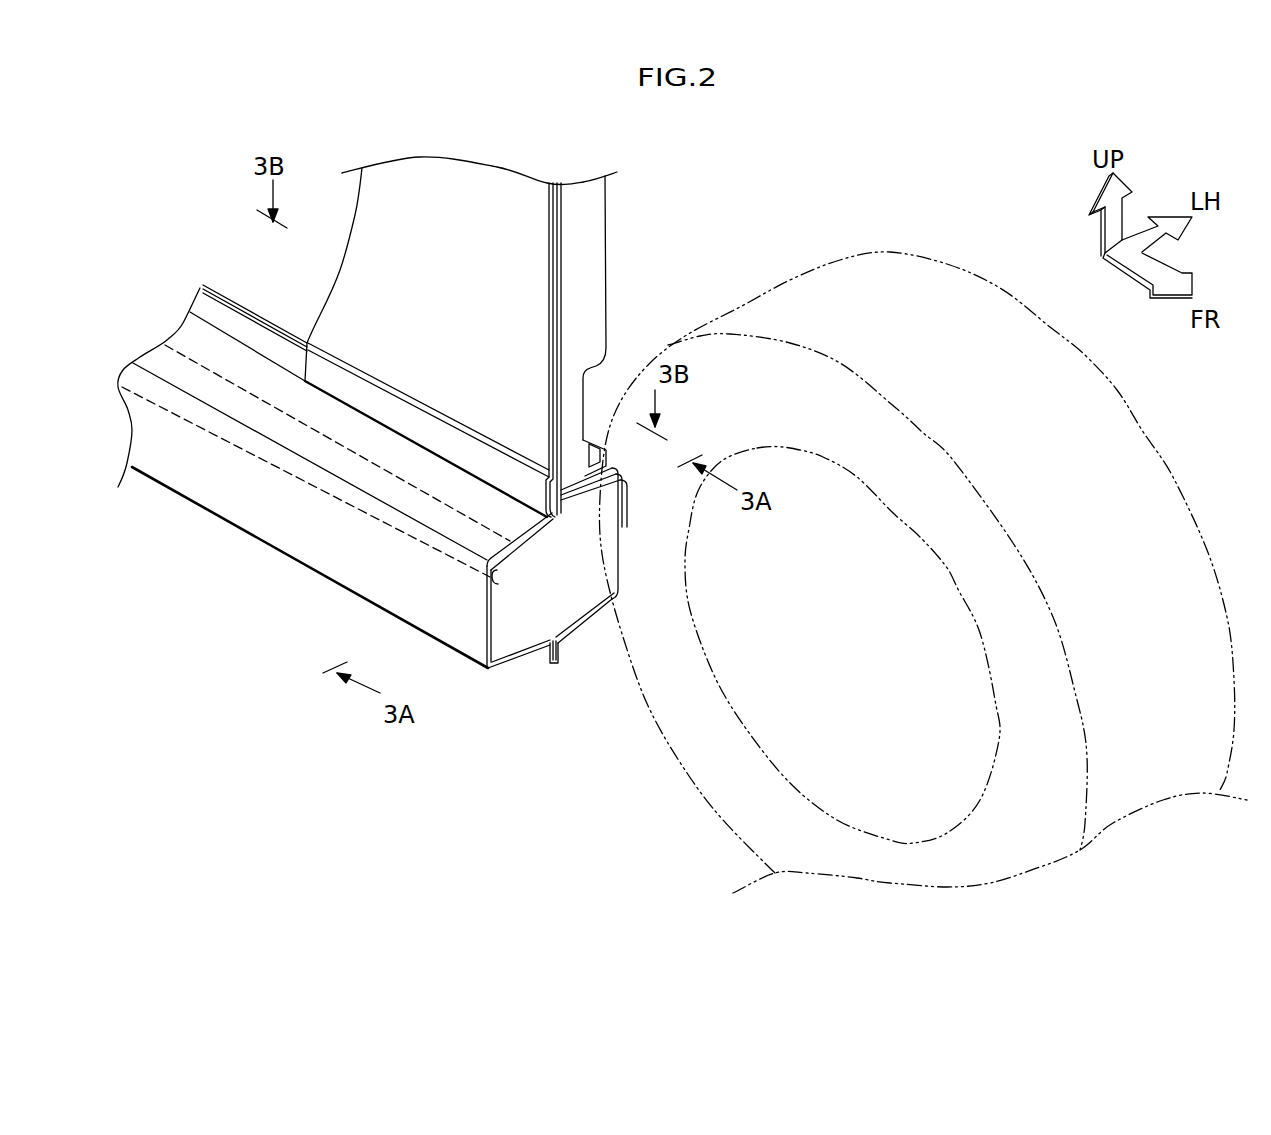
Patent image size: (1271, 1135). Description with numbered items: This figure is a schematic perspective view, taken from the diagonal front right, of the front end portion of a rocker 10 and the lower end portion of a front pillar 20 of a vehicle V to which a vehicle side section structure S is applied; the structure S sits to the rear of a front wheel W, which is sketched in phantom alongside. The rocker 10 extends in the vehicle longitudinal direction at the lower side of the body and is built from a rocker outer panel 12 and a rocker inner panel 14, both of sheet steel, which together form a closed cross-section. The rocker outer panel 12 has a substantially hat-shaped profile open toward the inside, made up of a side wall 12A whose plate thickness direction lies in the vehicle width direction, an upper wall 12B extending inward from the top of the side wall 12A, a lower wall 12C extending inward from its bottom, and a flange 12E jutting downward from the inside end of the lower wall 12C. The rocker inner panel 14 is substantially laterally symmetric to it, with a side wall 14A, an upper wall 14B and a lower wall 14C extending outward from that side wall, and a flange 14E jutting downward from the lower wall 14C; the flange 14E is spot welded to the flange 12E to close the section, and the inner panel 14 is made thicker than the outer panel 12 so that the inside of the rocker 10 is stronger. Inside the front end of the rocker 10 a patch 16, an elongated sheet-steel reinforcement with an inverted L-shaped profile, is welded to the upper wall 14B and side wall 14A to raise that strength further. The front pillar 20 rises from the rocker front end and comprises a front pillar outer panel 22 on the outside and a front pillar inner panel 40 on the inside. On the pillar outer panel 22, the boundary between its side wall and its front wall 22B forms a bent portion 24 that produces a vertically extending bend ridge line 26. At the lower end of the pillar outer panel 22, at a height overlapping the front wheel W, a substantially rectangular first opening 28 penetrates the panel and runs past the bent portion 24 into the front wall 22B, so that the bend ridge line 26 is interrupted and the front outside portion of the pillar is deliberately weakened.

The rocker 10 is at (353, 593).
The rocker outer panel 12 is at (625, 569).
The side wall 12A is at (620, 548).
The upper wall 12B is at (580, 507).
The lower wall 12C is at (587, 617).
The flange 12E is at (258, 312).
The rocker inner panel 14 is at (303, 565).
The side wall 14A is at (462, 633).
The upper wall 14B is at (512, 538).
The lower wall 14C is at (518, 657).
The flange 14E is at (200, 300).
The patch 16 is at (490, 575).
The front pillar 20 is at (492, 163).
The front pillar outer panel 22 is at (607, 197).
The front wall 22B is at (585, 253).
The bent portion 24 is at (606, 303).
The bend ridge line 26 is at (594, 308).
The first opening 28 is at (612, 370).
The front pillar inner panel 40 is at (400, 187).
The vehicle V is at (830, 145).
The vehicle side section structure S is at (725, 207).
The front wheel W is at (948, 265).